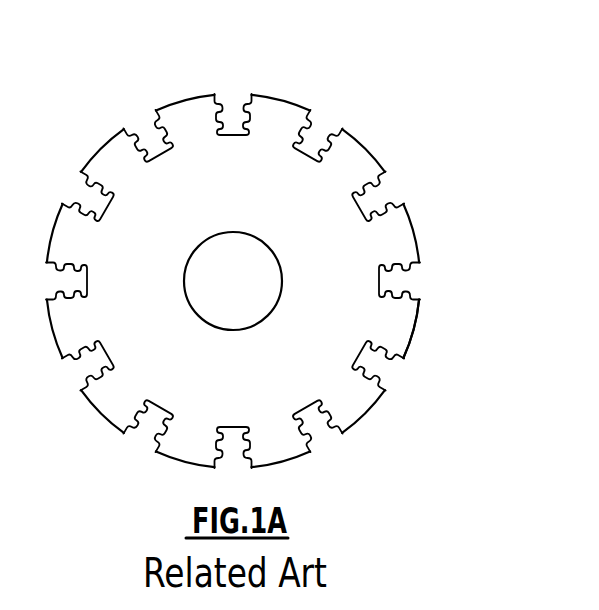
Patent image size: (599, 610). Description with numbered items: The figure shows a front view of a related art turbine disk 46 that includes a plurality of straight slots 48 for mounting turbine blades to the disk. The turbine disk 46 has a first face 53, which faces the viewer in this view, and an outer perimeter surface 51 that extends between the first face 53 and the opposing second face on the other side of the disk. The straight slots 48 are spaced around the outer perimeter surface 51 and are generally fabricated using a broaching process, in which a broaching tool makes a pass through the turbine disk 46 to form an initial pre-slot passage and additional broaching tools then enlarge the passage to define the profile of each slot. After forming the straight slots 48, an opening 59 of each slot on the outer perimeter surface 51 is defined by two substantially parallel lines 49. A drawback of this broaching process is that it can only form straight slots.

The turbine disk 46 is at (262, 272).
The straight slots 48 is at (390, 187).
The substantially parallel lines 49 is at (313, 112).
The outer perimeter surface 51 is at (418, 233).
The first face 53 is at (395, 325).
The opening 59 is at (323, 435).